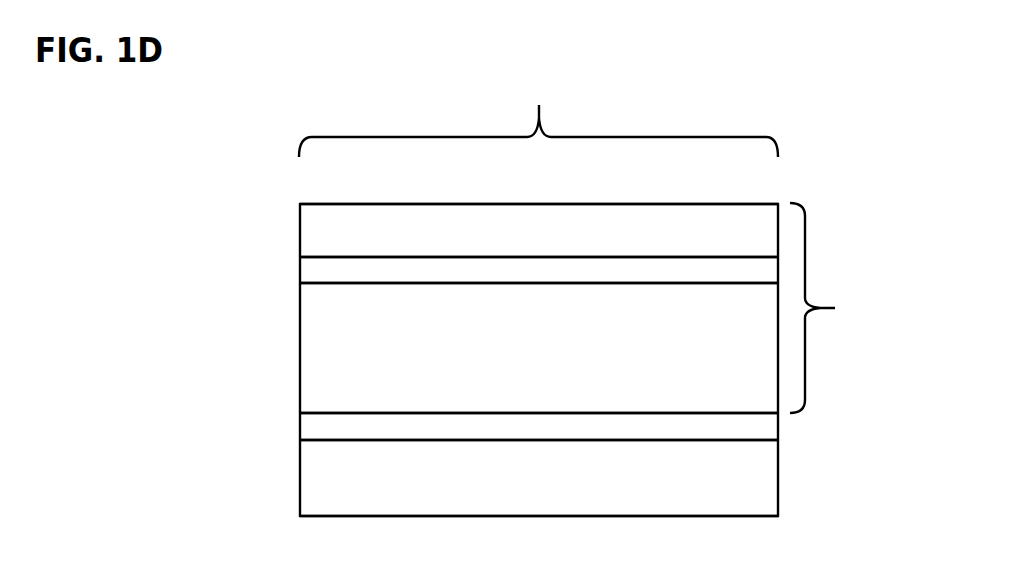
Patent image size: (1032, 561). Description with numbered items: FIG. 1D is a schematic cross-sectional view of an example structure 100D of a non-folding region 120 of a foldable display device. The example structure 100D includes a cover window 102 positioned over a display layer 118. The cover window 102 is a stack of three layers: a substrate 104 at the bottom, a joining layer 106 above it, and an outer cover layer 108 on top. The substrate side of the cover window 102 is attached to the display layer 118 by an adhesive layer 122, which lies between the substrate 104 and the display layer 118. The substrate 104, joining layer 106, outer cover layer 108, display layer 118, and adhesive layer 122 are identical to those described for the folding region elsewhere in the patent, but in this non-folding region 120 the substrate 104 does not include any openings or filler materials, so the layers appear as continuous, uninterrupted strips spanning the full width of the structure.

The example structure 100D is at (817, 108).
The cover window 102 is at (851, 308).
The substrate 104 is at (306, 342).
The joining layer 106 is at (306, 267).
The outer cover layer 108 is at (306, 212).
The display layer 118 is at (306, 484).
The non-folding region 120 is at (538, 113).
The adhesive layer 122 is at (306, 418).